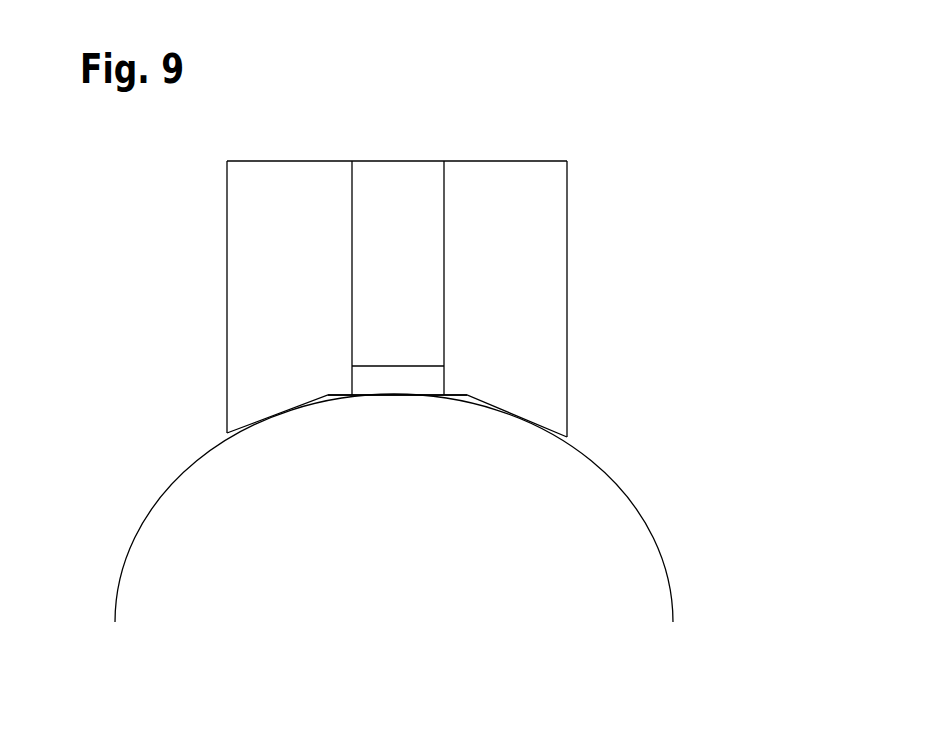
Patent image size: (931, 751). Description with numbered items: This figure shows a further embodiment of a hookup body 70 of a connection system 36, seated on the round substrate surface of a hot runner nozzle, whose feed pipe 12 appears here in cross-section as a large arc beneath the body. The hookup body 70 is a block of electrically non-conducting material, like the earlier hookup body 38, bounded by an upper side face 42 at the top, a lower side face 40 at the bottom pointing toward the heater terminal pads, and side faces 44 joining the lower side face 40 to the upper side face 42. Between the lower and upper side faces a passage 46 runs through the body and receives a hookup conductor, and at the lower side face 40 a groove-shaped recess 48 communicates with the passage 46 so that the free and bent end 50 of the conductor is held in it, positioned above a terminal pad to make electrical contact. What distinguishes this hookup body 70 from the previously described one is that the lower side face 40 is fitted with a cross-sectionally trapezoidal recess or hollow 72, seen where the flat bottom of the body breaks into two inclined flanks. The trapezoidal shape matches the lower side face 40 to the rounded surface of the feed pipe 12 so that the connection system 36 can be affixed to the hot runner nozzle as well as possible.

The feed pipe 12 is at (662, 568).
The connection system 36 is at (688, 153).
The hookup body 38 is at (413, 220).
The lower side face 40 is at (518, 423).
The upper side face 42 is at (264, 158).
The side faces 44 is at (227, 220).
The passages 46 is at (352, 239).
The groove-shaped recesses 48 is at (444, 357).
The free and bent ends 50 is at (373, 385).
The hookup body 70 is at (496, 143).
The trapezoidal recess 72 is at (460, 410).